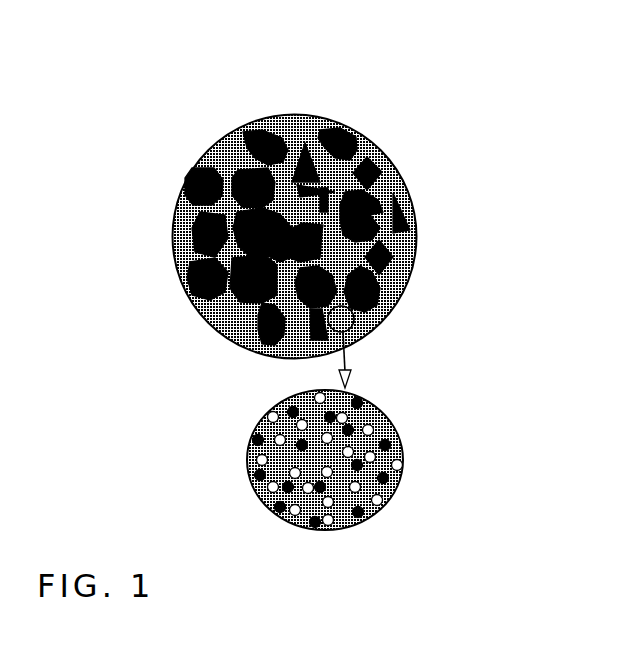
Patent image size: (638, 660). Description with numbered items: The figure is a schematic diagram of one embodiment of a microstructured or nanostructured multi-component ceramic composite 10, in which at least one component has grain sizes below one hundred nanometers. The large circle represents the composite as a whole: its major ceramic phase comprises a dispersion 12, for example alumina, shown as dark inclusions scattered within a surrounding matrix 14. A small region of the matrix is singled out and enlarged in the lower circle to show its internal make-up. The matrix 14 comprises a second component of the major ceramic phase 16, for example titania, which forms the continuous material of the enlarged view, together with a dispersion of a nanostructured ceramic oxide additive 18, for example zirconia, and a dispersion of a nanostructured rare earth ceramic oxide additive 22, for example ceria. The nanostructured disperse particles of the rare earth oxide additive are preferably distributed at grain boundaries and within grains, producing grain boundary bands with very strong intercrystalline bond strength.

The multi-component ceramic composite 10 is at (329, 84).
The dispersion 12 is at (380, 166).
The matrix 14 is at (398, 272).
The second component of the major ceramic phase 16 is at (356, 511).
The nanostructured ceramic oxide additive 18 is at (394, 439).
The nanostructured rare earth ceramic oxide additive 22 is at (403, 465).